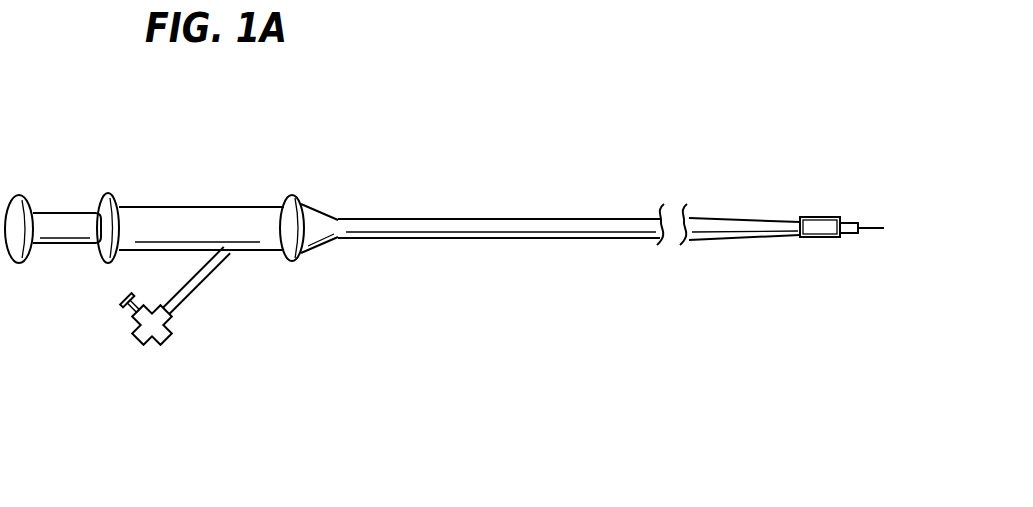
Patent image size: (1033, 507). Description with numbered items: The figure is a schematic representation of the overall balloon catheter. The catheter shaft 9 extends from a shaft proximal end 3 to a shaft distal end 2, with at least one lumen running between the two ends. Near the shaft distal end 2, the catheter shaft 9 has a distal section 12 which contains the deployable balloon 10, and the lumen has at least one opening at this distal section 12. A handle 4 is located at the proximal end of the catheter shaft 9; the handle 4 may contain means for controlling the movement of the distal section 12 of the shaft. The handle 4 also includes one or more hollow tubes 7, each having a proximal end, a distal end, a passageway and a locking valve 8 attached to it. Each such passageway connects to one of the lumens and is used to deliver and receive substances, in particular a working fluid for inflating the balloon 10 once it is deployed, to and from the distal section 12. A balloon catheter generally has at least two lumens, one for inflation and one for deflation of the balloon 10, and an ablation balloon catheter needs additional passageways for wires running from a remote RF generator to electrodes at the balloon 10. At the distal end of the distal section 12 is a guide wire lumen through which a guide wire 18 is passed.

The shaft distal end 2 is at (864, 209).
The shaft proximal end 3 is at (341, 217).
The handle 4 is at (181, 206).
The hollow tube 7 is at (197, 295).
The locking valve 8 is at (148, 345).
The catheter shaft 9 is at (550, 217).
The deployable balloon 10 is at (822, 240).
The distal section 12 is at (793, 197).
The guide wire 18 is at (869, 235).